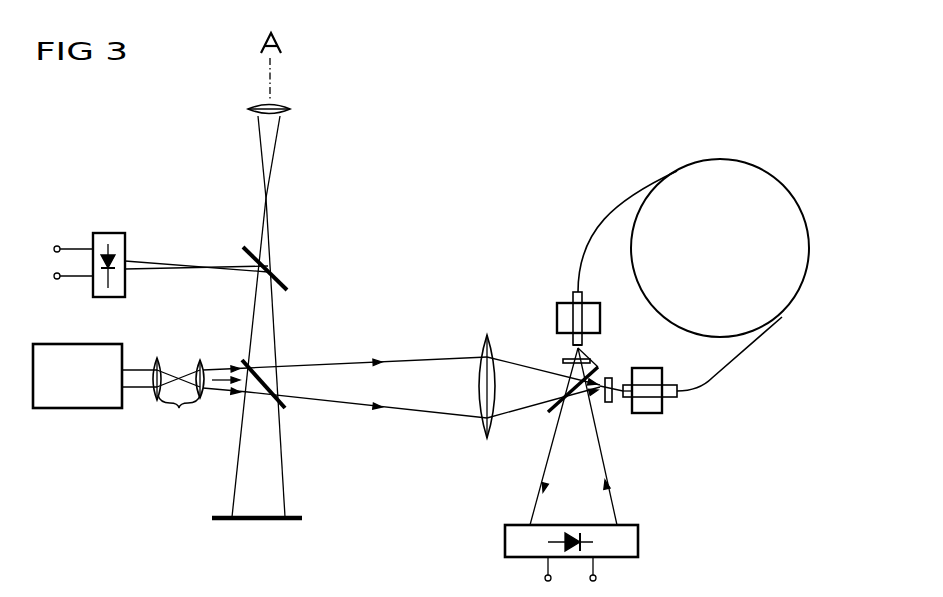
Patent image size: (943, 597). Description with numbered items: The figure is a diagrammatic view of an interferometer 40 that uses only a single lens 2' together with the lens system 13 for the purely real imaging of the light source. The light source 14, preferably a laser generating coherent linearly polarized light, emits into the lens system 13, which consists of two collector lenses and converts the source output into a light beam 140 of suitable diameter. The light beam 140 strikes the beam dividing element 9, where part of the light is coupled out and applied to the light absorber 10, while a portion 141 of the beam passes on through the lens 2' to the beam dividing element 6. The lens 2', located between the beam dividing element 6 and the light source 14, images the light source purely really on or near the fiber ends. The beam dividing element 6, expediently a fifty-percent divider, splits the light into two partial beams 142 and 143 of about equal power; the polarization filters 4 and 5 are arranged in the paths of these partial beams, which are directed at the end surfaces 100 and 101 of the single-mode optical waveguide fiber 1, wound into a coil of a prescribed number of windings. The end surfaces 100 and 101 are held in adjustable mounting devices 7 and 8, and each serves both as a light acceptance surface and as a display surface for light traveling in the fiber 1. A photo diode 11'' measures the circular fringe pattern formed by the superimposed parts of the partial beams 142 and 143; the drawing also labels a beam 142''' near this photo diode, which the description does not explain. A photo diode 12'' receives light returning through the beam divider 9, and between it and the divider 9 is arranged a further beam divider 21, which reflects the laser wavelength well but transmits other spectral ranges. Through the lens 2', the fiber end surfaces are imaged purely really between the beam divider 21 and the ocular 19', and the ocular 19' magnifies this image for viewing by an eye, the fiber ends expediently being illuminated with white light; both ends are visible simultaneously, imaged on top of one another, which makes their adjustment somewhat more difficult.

The single-mode optical waveguide fiber 1 is at (739, 358).
The lens 2' is at (483, 374).
The polarization filter 4 is at (608, 400).
The polarization filter 5 is at (563, 361).
The beam dividing element 6 is at (556, 409).
The adjustable mounting device 7 is at (585, 318).
The adjustable mounting device 8 is at (650, 406).
The beam dividing element 9 is at (269, 394).
The light absorber 10 is at (257, 535).
The photo diode 11'' is at (587, 553).
The photo diode 12'' is at (91, 250).
The lens system 13 is at (178, 398).
The light source 14 is at (77, 391).
The ocular 19' is at (282, 107).
The beam divider 21 is at (257, 253).
The interferometer 40 is at (370, 278).
The end surface 100 is at (617, 378).
The end surface 101 is at (568, 350).
The light beam 140 is at (231, 364).
The portion of the light beam 141 is at (380, 349).
The partial beam 142 is at (582, 436).
The light beam 142''' is at (632, 494).
The partial beam 143 is at (588, 372).